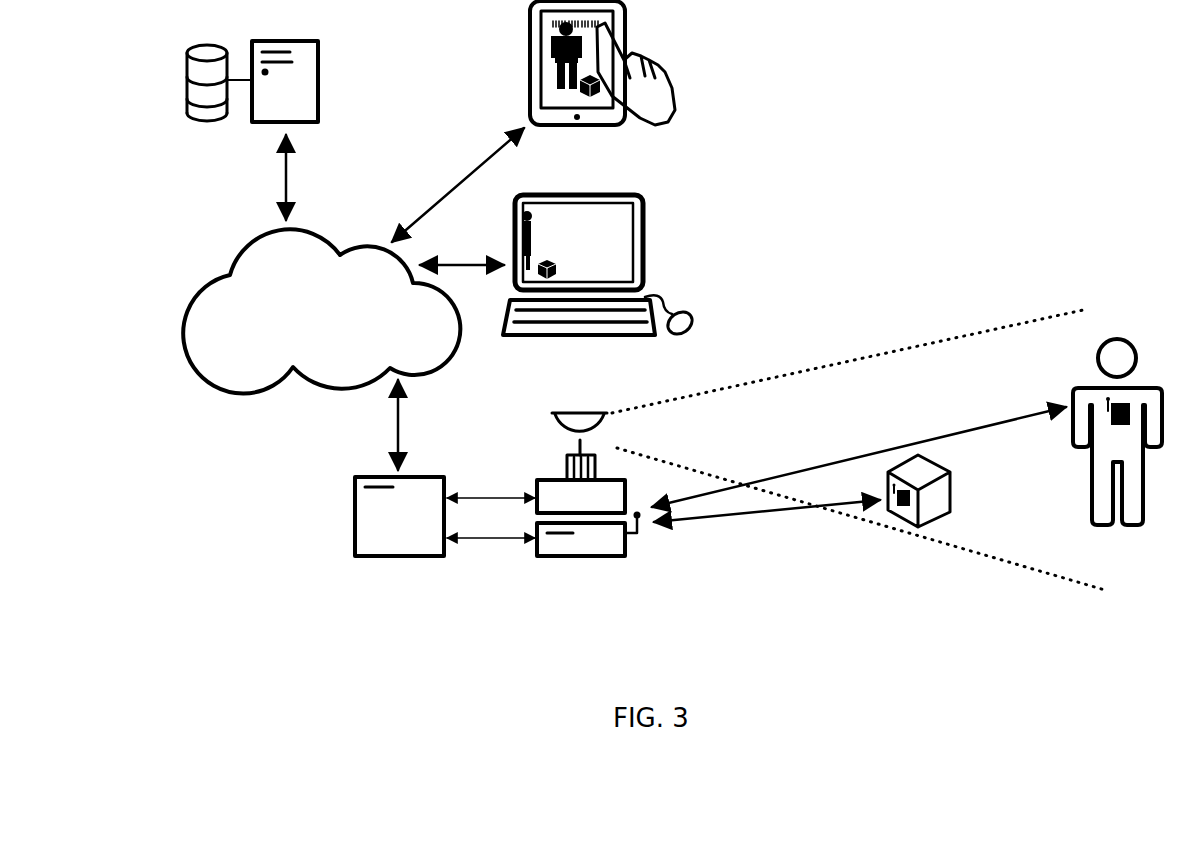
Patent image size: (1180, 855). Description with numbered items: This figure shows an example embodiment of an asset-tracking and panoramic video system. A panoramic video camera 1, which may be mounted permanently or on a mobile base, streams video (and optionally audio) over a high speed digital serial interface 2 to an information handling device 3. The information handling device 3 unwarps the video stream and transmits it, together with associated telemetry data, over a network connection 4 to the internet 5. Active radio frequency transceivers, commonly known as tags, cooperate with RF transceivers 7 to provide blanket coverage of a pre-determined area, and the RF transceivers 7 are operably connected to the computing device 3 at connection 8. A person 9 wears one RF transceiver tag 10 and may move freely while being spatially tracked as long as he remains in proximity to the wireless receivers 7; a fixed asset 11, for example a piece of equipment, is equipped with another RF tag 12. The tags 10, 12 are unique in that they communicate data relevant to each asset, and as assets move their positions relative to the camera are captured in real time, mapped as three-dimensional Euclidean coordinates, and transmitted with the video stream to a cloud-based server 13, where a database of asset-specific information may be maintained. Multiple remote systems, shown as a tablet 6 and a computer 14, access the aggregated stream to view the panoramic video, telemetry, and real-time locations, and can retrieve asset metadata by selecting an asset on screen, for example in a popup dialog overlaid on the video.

The panoramic video camera 1 is at (821, 450).
The high speed digital serial interface 2 is at (491, 486).
The information handling device 3 is at (399, 534).
The network connection 4 is at (412, 425).
The internet 5 is at (321, 321).
The remote system (tablet information handling device) 6 is at (533, 121).
The RF transceivers 7 is at (801, 499).
The operable connection 8 is at (491, 557).
The person 9 is at (1106, 432).
The RF transceiver tag 10 is at (1117, 428).
The fixed asset 11 is at (939, 491).
The RF tag 12 is at (900, 523).
The cloud-based server 13 is at (233, 130).
The remote system (computer information handling device) 14 is at (558, 267).